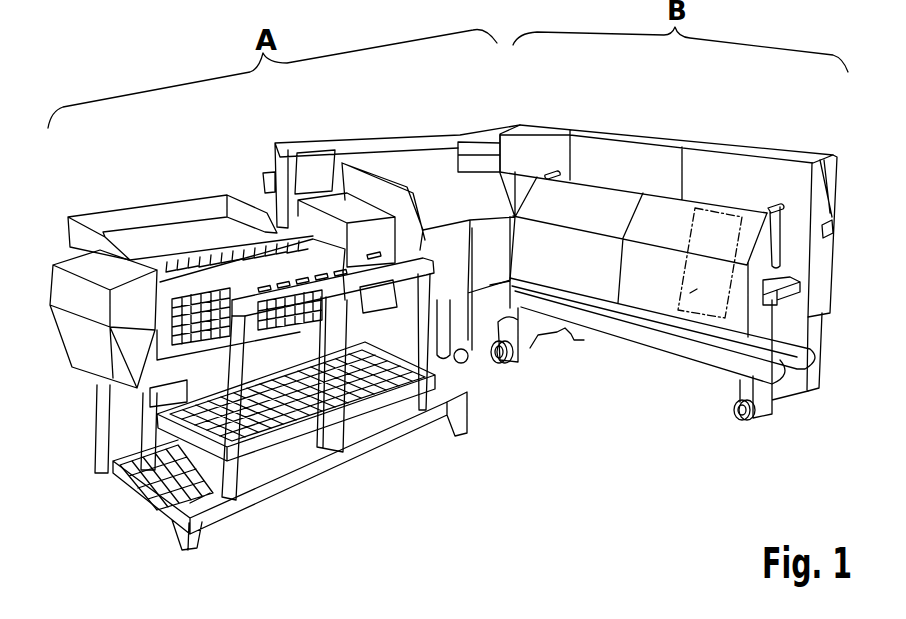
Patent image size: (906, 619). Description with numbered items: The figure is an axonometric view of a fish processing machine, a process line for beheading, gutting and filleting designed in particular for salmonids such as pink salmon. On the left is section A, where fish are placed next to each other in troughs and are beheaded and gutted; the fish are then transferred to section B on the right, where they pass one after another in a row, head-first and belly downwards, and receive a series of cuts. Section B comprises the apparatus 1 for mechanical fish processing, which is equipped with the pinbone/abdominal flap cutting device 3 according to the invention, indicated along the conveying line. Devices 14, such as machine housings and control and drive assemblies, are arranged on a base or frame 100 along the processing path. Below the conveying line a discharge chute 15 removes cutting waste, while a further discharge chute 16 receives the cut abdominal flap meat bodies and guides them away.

The apparatus for mechanical fish processing 1 is at (638, 314).
The pinbone/abdominal flap cutting device 3 is at (680, 336).
The devices 14 is at (639, 136).
The discharge chute 15 is at (712, 369).
The discharge chute 16 is at (809, 393).
The frame 100 is at (820, 345).